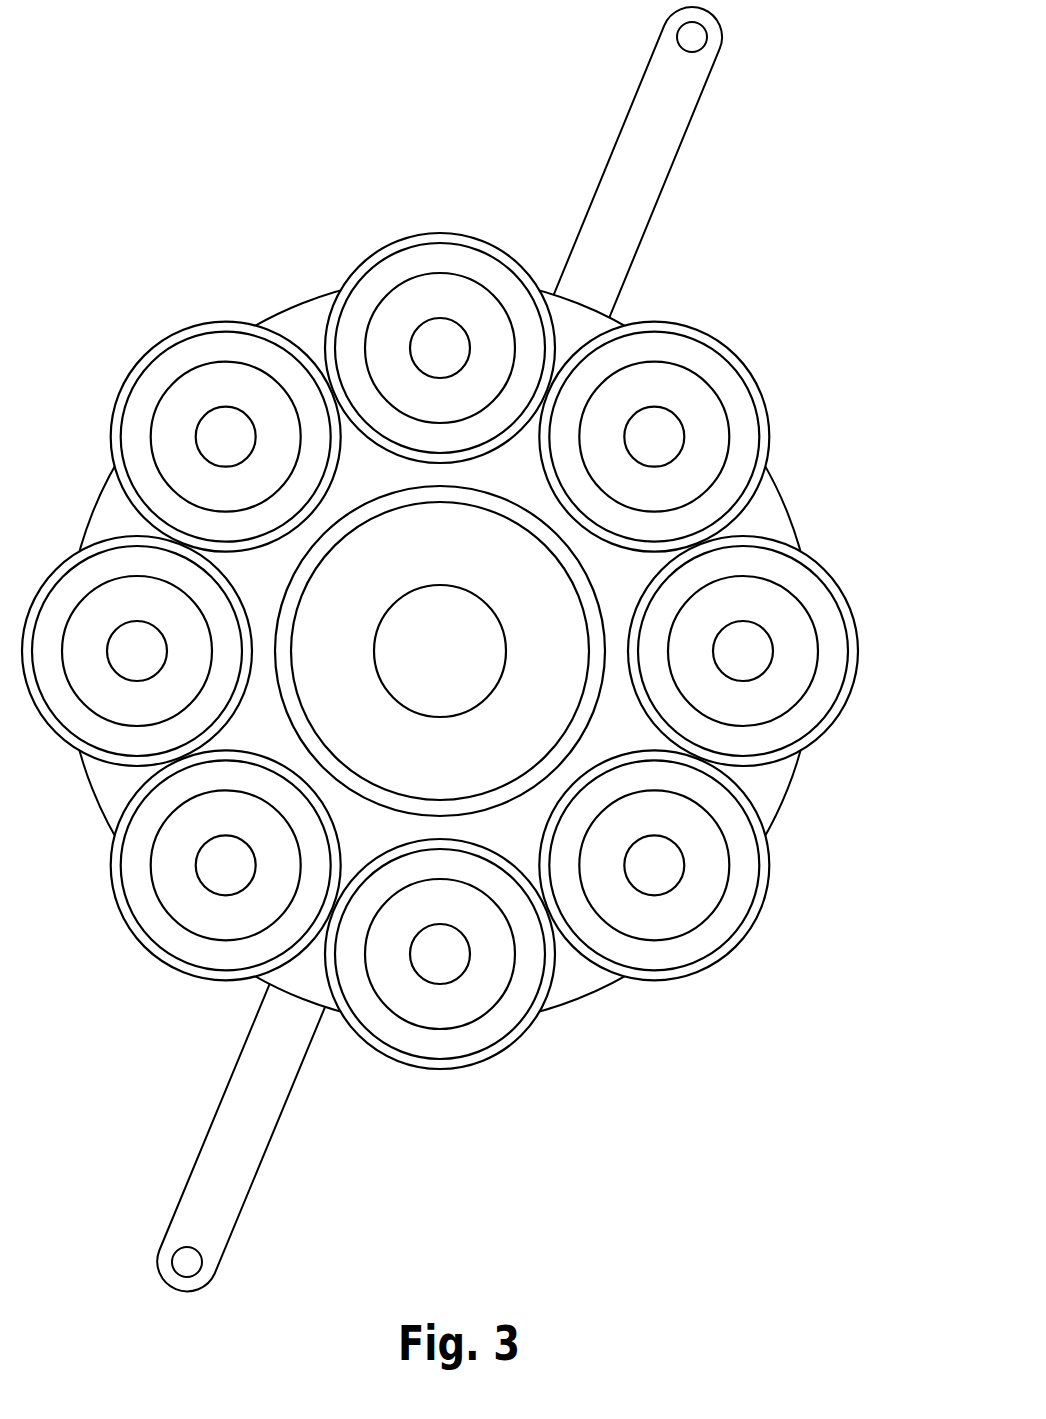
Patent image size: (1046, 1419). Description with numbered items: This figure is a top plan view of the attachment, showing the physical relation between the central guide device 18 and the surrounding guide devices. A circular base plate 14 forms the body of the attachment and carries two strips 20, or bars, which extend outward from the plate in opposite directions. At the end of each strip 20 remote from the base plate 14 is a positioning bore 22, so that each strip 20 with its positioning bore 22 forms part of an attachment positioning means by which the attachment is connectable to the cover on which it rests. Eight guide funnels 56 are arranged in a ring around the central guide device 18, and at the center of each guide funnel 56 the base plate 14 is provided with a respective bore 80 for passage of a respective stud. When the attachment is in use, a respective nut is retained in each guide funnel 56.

The base plate 14 is at (785, 512).
The guide device 18 is at (500, 807).
The strip 20 is at (640, 127).
The positioning bore 22 is at (690, 40).
The guide funnel 56 is at (152, 343).
The bore 80 is at (662, 428).